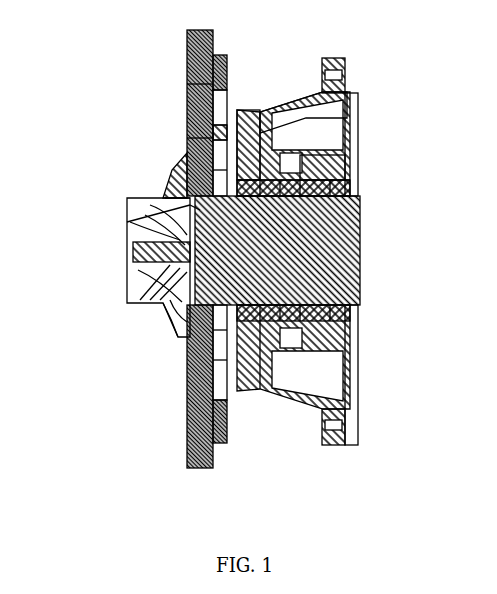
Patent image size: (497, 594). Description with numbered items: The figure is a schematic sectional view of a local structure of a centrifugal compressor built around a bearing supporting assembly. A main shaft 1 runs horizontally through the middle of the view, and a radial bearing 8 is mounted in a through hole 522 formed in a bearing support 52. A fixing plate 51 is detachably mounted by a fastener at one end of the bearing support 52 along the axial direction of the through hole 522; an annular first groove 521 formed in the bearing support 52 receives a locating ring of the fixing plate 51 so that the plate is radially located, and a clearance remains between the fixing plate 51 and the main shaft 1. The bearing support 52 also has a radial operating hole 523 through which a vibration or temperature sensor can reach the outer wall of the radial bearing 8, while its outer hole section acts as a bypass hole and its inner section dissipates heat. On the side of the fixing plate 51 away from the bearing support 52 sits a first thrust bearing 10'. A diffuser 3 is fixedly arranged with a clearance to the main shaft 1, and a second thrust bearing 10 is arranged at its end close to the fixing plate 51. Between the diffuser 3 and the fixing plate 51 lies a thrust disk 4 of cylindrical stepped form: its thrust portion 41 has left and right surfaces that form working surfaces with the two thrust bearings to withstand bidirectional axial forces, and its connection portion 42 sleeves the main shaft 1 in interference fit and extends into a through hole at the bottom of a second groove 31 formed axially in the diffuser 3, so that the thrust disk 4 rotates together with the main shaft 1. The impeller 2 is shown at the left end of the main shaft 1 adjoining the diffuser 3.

The main shaft 1 is at (315, 240).
The impeller 2 is at (137, 303).
The diffuser 3 is at (188, 465).
The thrust disk 4 is at (227, 443).
The radial bearing 8 is at (348, 402).
The second thrust bearing 10 is at (101, 154).
The first thrust bearing 10' is at (107, 193).
The second groove 31 is at (186, 84).
The thrust portion 41 is at (187, 138).
The connection portion 42 is at (197, 207).
The fixing plate 51 is at (250, 385).
The bearing support 52 is at (333, 163).
The first groove 521 is at (257, 118).
The through hole 522 is at (300, 176).
The operating hole 523 is at (290, 112).